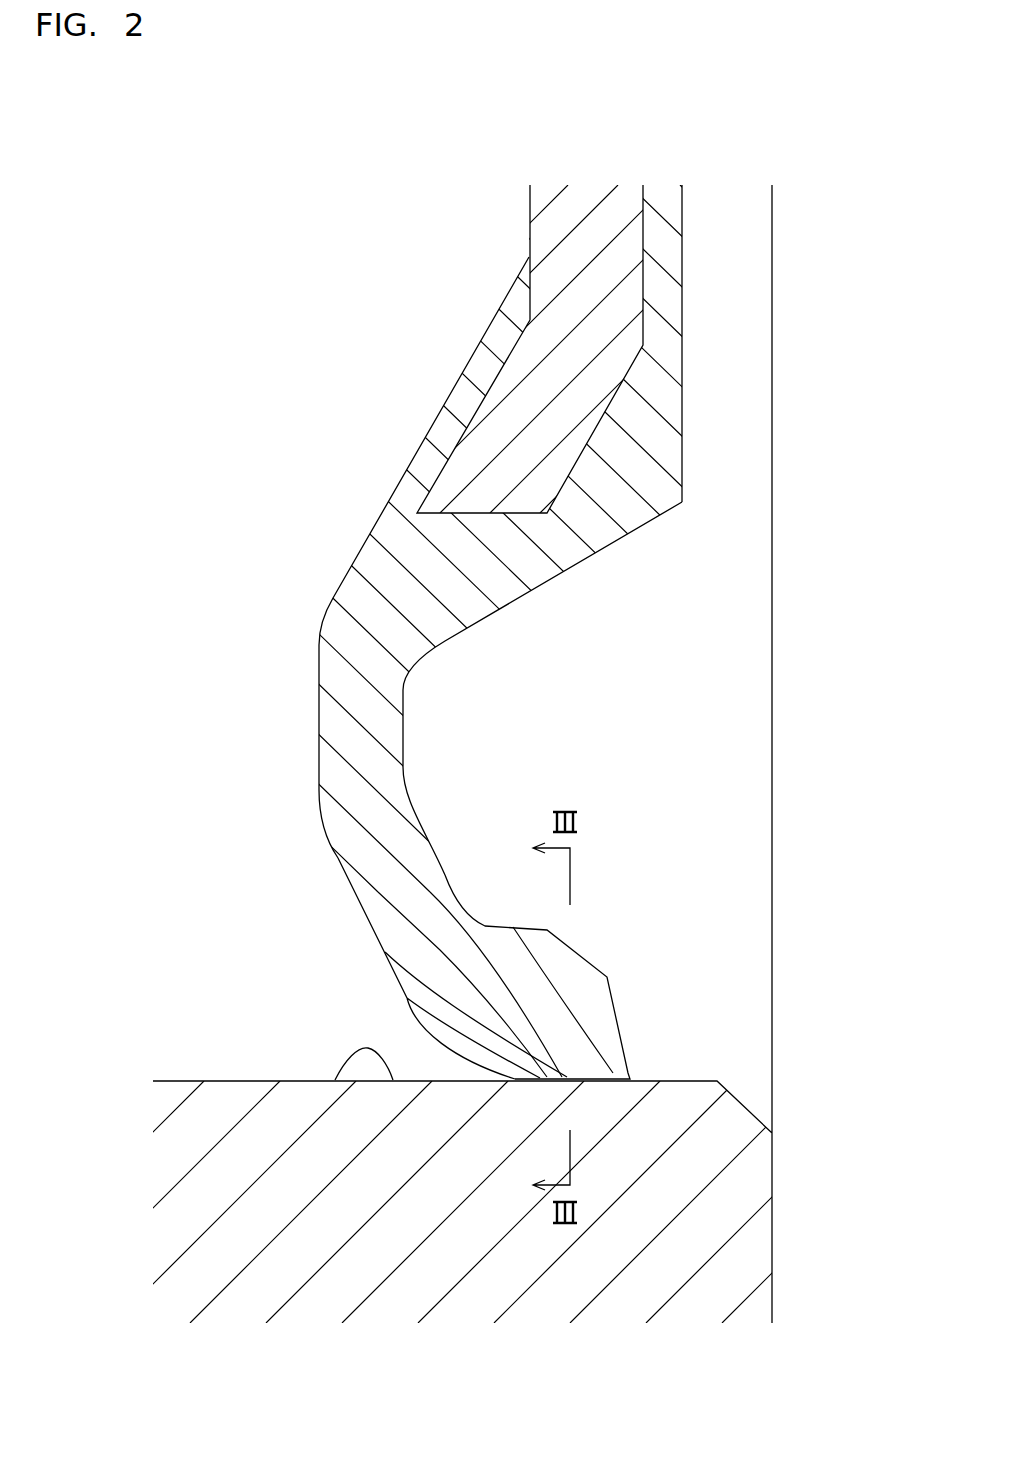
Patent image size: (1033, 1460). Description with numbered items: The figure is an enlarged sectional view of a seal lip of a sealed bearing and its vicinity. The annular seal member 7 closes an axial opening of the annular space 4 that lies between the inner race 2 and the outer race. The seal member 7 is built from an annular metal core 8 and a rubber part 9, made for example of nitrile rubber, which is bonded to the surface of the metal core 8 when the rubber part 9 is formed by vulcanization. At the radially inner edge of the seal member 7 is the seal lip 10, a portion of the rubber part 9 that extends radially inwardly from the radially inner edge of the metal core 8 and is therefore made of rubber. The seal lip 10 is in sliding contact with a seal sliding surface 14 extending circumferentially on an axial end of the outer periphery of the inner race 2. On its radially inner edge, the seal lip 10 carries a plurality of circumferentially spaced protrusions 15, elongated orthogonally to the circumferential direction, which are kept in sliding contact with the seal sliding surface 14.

The inner race 2 is at (727, 1193).
The annular space 4 is at (243, 793).
The seal member 7 is at (697, 403).
The metal core 8 is at (581, 195).
The rubber part 9 is at (660, 192).
The seal lip 10 is at (616, 994).
The seal sliding surface 14 is at (335, 1080).
The protrusion 15 is at (437, 1027).